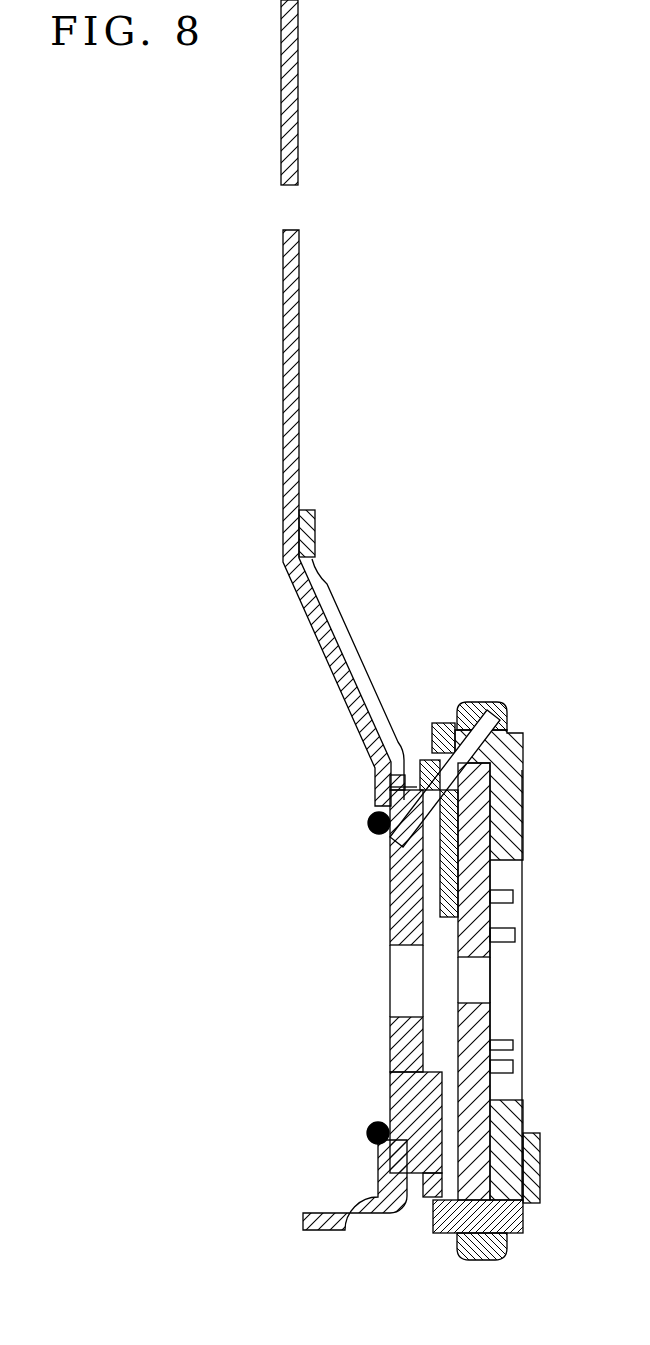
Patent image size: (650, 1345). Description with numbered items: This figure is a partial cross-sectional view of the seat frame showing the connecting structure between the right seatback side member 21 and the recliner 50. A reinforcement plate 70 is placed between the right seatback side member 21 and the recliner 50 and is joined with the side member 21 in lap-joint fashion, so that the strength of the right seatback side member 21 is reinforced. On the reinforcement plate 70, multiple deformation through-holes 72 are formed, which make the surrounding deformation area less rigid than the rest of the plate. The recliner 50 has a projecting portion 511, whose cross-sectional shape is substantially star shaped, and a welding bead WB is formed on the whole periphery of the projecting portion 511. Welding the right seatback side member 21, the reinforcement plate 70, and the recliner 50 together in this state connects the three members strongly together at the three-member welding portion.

The right seatback side member 21 is at (282, 308).
The reinforcement plate 70 is at (315, 536).
The deformation through-holes 72 is at (322, 578).
The recliner 50 is at (451, 957).
The projecting portion 511 is at (390, 908).
The welding bead WB is at (367, 830).